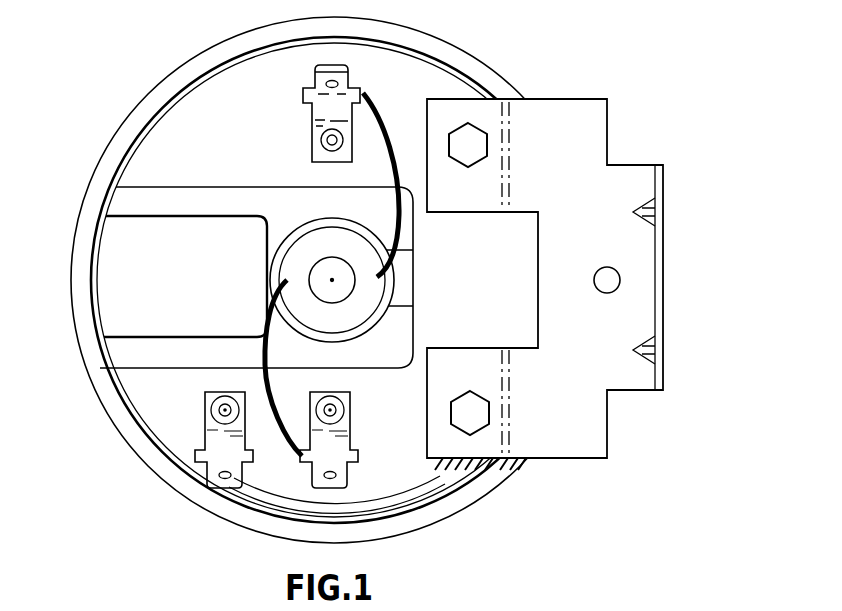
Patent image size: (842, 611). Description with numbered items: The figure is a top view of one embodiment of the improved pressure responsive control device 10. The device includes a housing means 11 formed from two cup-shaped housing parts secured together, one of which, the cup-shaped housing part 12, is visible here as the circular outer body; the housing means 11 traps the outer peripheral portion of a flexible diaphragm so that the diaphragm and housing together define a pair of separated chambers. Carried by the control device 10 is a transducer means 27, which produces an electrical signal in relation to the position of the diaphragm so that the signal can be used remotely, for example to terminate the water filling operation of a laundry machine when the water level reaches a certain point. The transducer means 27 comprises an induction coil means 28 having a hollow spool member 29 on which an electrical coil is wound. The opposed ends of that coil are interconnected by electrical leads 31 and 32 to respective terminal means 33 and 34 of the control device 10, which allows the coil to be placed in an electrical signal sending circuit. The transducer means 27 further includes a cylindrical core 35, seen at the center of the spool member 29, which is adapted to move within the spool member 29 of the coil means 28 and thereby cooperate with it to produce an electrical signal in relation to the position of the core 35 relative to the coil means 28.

The pressure responsive control device 10 is at (657, 59).
The housing means 11 is at (132, 150).
The cup-shaped housing part 12 is at (122, 383).
The transducer means 27 is at (289, 219).
The induction coil means 28 is at (386, 318).
The hollow spool member 29 is at (299, 243).
The electrical lead 31 is at (270, 311).
The electrical lead 32 is at (403, 224).
The terminal means 33 is at (347, 436).
The terminal means 34 is at (318, 113).
The cylindrical core 35 is at (320, 273).